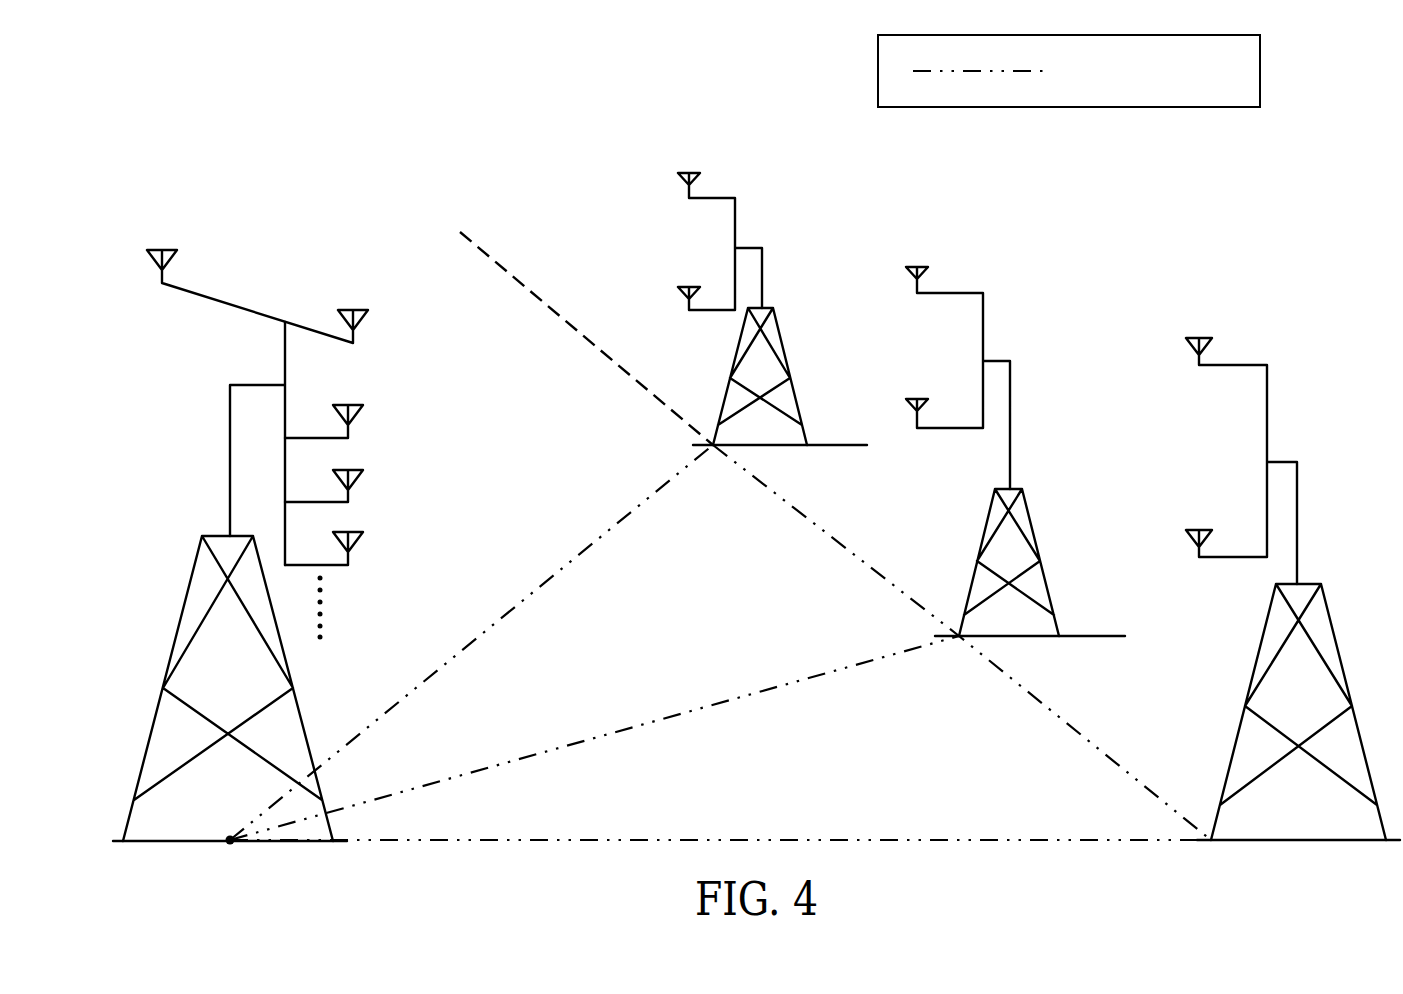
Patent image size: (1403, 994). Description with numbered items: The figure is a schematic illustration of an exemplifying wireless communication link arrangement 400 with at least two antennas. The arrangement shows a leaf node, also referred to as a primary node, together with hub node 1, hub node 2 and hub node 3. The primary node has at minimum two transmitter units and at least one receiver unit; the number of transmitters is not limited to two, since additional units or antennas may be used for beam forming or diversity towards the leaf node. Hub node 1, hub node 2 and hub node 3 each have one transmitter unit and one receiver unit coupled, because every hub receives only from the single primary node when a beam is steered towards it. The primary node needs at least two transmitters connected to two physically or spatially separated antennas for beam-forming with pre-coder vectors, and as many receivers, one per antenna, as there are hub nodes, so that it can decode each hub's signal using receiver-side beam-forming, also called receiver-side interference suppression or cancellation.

The wireless communication link arrangement 400 is at (756, 477).
The hub node 1 is at (1272, 603).
The hub node 2 is at (992, 461).
The hub node 3 is at (751, 315).